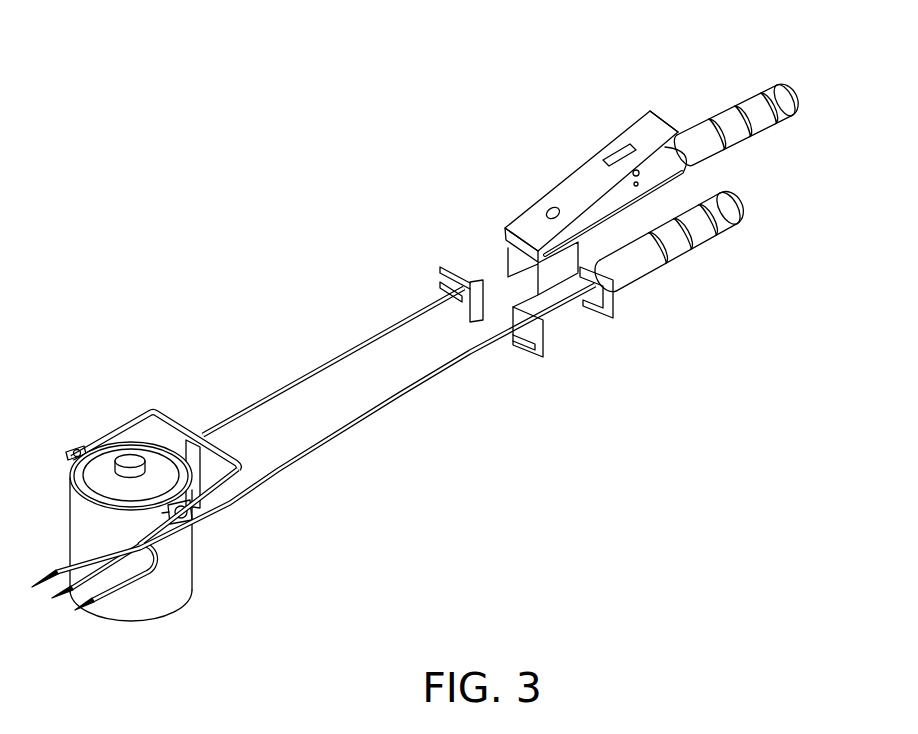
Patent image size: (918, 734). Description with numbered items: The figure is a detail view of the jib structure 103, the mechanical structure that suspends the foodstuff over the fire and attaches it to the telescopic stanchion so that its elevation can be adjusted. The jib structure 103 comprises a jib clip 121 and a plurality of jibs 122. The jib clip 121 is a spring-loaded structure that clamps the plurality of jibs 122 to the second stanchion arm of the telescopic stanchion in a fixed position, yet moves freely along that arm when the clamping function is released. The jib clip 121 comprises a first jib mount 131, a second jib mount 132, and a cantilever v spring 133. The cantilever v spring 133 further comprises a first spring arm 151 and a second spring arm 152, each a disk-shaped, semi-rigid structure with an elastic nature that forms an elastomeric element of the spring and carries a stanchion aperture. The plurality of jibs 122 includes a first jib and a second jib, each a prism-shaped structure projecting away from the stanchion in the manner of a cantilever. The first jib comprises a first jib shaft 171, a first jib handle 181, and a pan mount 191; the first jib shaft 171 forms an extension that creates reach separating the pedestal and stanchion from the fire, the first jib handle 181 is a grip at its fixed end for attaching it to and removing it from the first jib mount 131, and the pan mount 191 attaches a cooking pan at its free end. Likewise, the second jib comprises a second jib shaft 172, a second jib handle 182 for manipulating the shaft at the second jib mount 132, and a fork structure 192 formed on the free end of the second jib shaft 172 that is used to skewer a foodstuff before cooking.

The jib structure 103 is at (150, 122).
The jib clip 121 is at (553, 160).
The plurality of jibs 122 is at (290, 393).
The first jib mount 131 is at (465, 268).
The second jib mount 132 is at (527, 360).
The cantilever v spring 133 is at (600, 145).
The first spring arm 151 is at (658, 118).
The second spring arm 152 is at (680, 172).
The first jib shaft 171 is at (322, 362).
The second jib shaft 172 is at (380, 417).
The first jib handle 181 is at (802, 102).
The second jib handle 182 is at (742, 216).
The pan mount 191 is at (123, 428).
The fork structure 192 is at (90, 620).